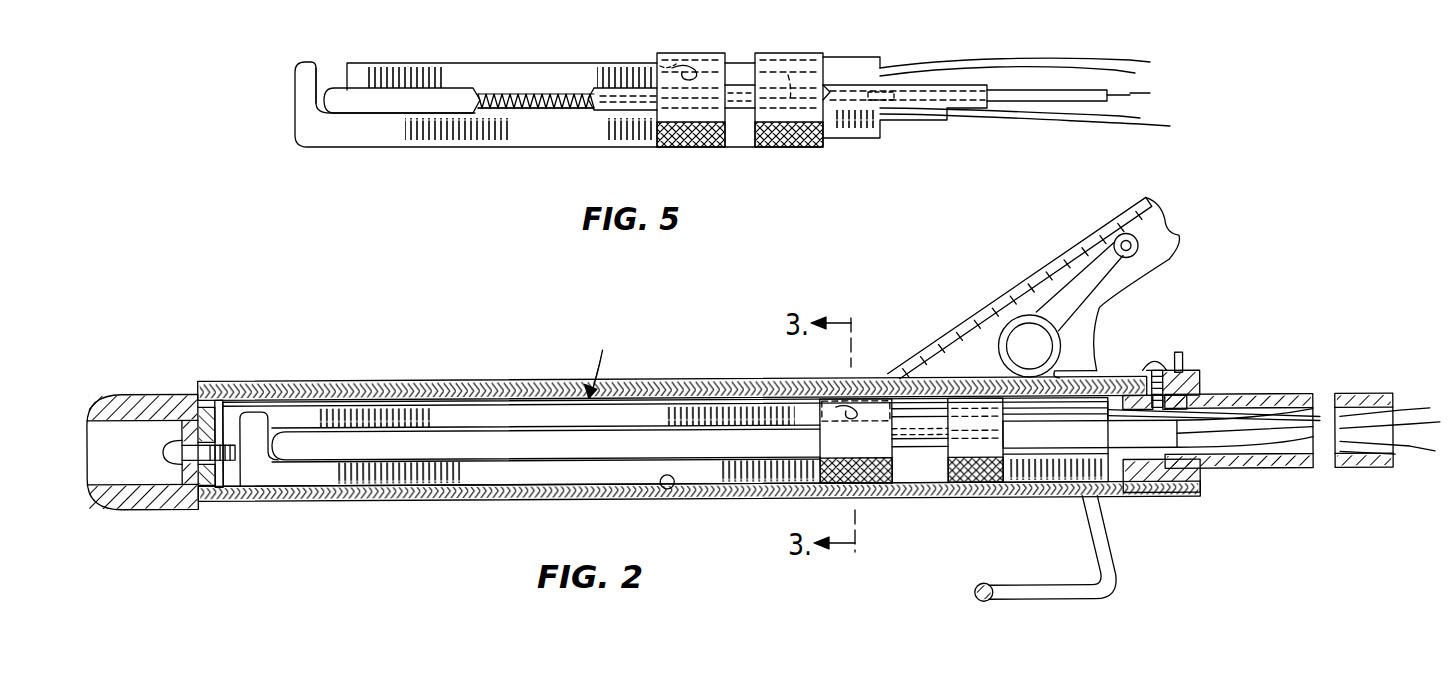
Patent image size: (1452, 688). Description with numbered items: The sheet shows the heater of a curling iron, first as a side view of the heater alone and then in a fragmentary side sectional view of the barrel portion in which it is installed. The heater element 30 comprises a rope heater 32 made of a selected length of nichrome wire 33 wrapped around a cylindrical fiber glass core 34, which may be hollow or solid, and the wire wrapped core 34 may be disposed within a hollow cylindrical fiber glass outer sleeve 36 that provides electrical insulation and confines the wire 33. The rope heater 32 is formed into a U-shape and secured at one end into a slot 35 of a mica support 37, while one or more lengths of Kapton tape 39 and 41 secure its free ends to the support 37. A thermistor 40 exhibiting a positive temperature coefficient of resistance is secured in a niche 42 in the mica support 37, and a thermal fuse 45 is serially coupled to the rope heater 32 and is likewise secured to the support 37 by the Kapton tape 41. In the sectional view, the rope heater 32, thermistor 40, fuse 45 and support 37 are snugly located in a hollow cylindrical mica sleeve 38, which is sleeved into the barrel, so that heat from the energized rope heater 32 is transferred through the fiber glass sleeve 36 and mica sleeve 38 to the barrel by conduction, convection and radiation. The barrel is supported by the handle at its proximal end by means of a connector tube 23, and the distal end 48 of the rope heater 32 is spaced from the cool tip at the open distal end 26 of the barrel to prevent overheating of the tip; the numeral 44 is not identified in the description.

In FIG. 2, the connector tube 23 is at (1244, 397).
In FIG. 2, the open distal end 26 is at (131, 392).
In FIG. 5, the heater element 30 is at (499, 45).
In FIG. 2, the heater element 30 is at (600, 356).
In FIG. 5, the rope heater 32 is at (413, 100).
In FIG. 2, the rope heater 32 is at (440, 460).
In FIG. 5, the nichrome wire 33 is at (520, 95).
In FIG. 5, the fiber glass core 34 is at (547, 113).
In FIG. 5, the slot 35 is at (320, 67).
In FIG. 2, the slot 35 is at (309, 397).
In FIG. 5, the fiber glass outer sleeve 36 is at (625, 127).
In FIG. 5, the mica support 37 is at (327, 137).
In FIG. 2, the mica support 37 is at (470, 405).
In FIG. 2, the mica sleeve 38 is at (672, 490).
In FIG. 5, the Kapton tape 39 is at (715, 137).
In FIG. 2, the Kapton tape 39 is at (898, 472).
In FIG. 5, the thermistor 40 is at (688, 63).
In FIG. 5, the Kapton tape 41 is at (810, 137).
In FIG. 2, the Kapton tape 41 is at (1002, 472).
In FIG. 5, the niche 42 is at (648, 62).
In FIG. 2, the flange 44 is at (1133, 497).
In FIG. 5, the thermal fuse 45 is at (788, 87).
In FIG. 2, the distal end 48 is at (285, 397).